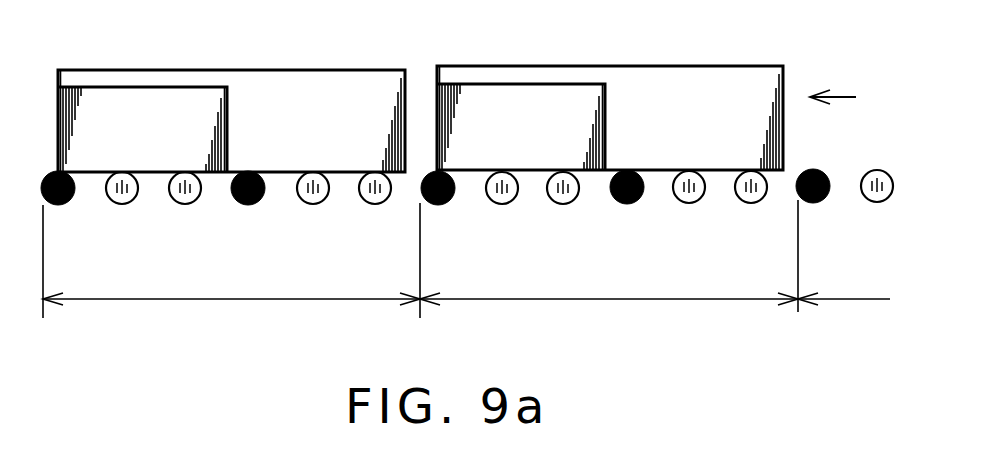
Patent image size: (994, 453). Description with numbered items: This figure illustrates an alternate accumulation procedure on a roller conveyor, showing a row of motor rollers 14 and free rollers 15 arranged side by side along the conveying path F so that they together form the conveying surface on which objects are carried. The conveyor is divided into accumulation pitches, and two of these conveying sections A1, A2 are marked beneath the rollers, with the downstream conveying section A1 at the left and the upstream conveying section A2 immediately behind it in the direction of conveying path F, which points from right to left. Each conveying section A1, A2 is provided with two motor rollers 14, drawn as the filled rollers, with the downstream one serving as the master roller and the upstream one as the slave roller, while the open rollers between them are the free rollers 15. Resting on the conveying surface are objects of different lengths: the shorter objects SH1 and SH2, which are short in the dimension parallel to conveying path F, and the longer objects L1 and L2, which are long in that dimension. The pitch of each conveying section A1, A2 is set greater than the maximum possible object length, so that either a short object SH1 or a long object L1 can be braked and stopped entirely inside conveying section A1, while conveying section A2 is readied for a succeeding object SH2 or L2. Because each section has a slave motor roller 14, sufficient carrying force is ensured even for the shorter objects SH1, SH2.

The motor roller 14 is at (62, 205).
The free roller 15 is at (177, 200).
The longer object L1 is at (370, 68).
The longer object L2 is at (748, 64).
The shorter object SH1 is at (228, 112).
The shorter object SH2 is at (606, 108).
The downstream conveying section A1 is at (231, 261).
The upstream conveying section A2 is at (655, 259).
The conveying path F is at (833, 85).